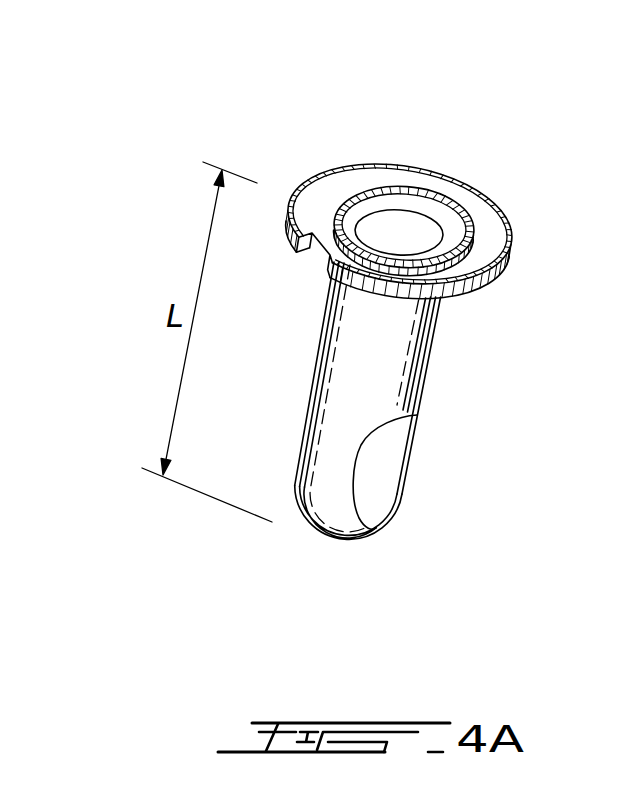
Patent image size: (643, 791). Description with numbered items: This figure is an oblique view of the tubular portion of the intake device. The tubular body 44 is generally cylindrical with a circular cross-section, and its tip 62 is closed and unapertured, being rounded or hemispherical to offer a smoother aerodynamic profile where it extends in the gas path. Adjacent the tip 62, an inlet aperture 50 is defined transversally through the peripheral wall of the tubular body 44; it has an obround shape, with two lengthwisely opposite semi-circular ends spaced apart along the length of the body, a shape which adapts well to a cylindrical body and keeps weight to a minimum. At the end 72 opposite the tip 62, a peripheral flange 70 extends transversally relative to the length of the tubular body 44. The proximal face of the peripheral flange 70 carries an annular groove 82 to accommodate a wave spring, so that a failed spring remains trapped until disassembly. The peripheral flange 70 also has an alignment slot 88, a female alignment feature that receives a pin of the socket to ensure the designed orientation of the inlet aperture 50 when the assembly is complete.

The tubular body 44 is at (297, 440).
The inlet aperture 50 is at (372, 462).
The tip 62 is at (325, 543).
The peripheral flange 70 is at (510, 225).
The end 72 is at (422, 212).
The annular groove 82 is at (358, 183).
The alignment slot 88 is at (322, 265).